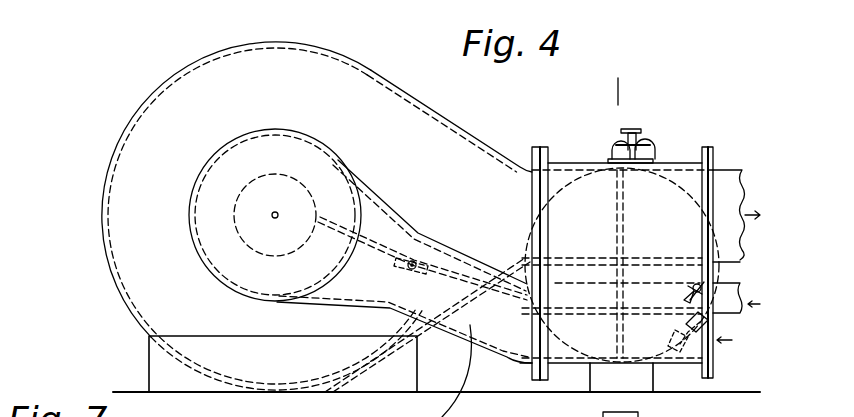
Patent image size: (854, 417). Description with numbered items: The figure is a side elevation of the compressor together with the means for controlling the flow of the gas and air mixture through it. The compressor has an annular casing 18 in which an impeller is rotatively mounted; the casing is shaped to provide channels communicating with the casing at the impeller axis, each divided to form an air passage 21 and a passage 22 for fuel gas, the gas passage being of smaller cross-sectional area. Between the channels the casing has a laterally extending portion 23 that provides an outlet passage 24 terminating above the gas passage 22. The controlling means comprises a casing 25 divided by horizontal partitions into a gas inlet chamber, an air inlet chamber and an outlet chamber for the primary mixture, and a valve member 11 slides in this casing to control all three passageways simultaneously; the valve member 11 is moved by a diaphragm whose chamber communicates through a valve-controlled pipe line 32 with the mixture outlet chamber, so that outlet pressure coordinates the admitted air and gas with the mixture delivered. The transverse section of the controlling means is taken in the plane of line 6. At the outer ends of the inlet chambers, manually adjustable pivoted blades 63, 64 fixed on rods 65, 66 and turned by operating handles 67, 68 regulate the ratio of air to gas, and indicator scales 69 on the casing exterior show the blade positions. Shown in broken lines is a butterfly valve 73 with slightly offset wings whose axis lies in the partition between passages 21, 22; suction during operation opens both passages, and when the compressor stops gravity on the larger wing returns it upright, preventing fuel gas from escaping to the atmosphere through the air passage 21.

The section line 6 is at (611, 96).
The valve member 11 is at (672, 160).
The annular casing 18 is at (125, 255).
The air passage 21 is at (507, 357).
The fuel gas passage 22 is at (473, 255).
The laterally extending portion 23 is at (467, 138).
The outlet passage 24 is at (517, 266).
The casing 25 is at (570, 164).
The valve-controlled pipe line 32 is at (646, 141).
The pivoted blade 63 is at (722, 313).
The pivoted blade 64 is at (687, 370).
The rod 65 is at (717, 283).
The rod 66 is at (714, 357).
The operating handle 67 is at (695, 283).
The operating handle 68 is at (683, 322).
The indicator scale 69 is at (683, 292).
The butterfly valve 73 is at (398, 264).